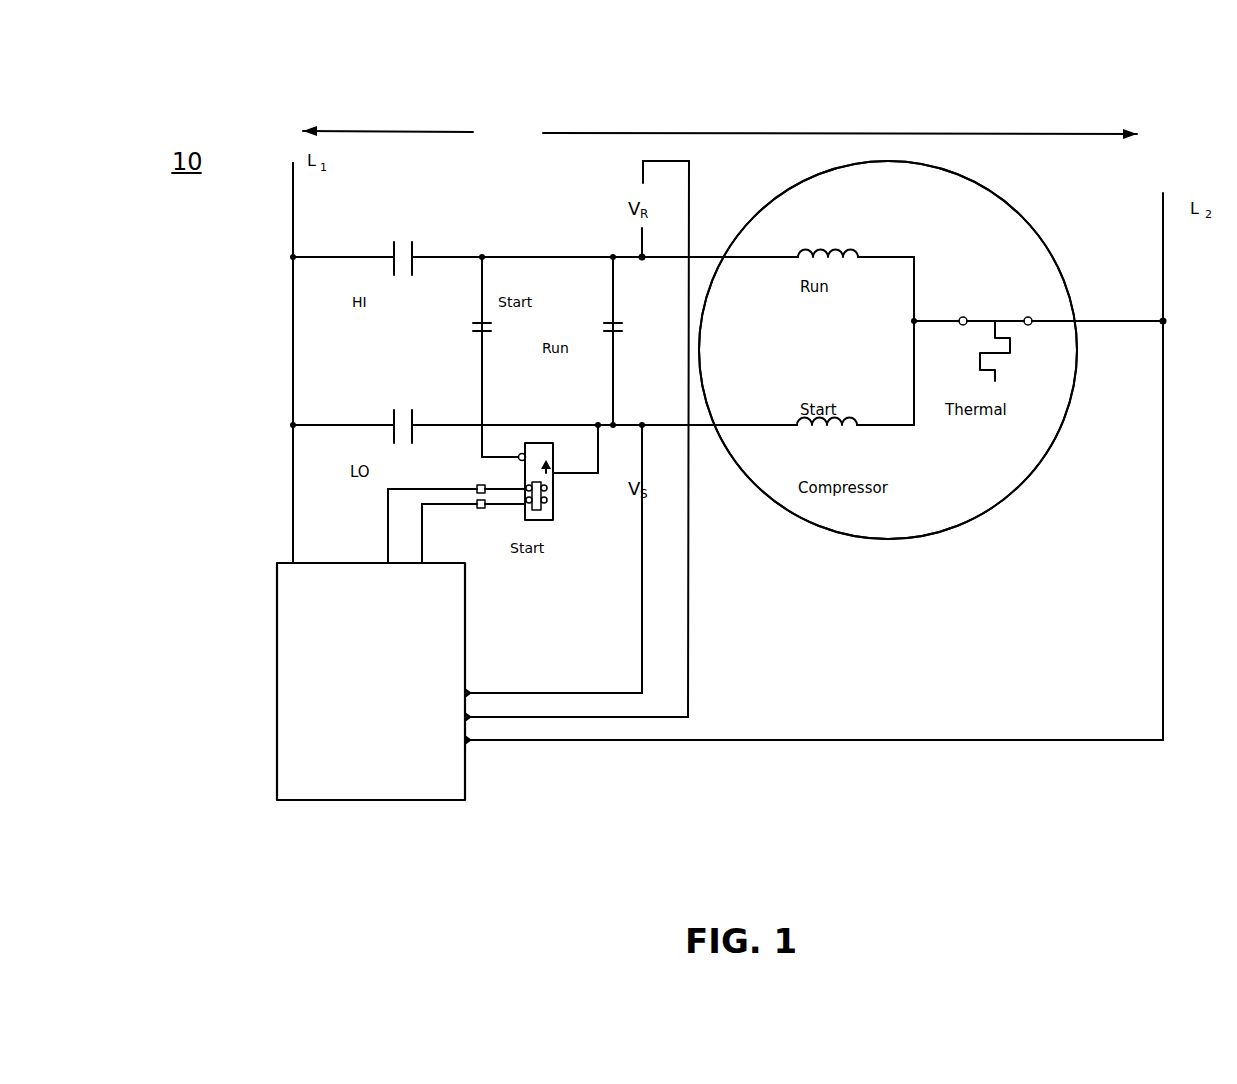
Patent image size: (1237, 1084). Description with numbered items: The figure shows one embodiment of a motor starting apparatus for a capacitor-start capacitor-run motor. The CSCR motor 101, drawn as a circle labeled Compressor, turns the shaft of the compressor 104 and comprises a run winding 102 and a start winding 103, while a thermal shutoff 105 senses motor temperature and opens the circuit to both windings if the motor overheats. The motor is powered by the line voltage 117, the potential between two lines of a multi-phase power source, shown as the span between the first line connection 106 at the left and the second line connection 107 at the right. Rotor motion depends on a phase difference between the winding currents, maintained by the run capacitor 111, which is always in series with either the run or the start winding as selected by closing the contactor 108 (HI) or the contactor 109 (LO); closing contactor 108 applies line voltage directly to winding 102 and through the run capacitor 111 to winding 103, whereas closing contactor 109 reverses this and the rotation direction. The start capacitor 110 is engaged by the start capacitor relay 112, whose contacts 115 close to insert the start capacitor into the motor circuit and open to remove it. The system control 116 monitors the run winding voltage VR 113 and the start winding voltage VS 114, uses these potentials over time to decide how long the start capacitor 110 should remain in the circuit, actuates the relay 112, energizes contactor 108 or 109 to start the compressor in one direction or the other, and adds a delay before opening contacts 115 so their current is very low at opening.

The CSCR motor 101 is at (1023, 497).
The run winding 102 is at (832, 242).
The start winding 103 is at (827, 440).
The compressor 104 is at (862, 509).
The thermal shutoff 105 is at (1005, 377).
The first AC line L1 106 is at (325, 178).
The second AC line L2 107 is at (1183, 190).
The contactor (HI) 108 is at (422, 243).
The contactor (LO) 109 is at (388, 403).
The start capacitor 110 is at (467, 330).
The run capacitor 111 is at (606, 320).
The start capacitor relay 112 is at (558, 507).
The run winding voltage VR 113 is at (620, 200).
The start winding voltage VS 114 is at (648, 488).
The contacts 115 is at (547, 453).
The system control 116 is at (477, 775).
The line voltage 117 is at (525, 112).